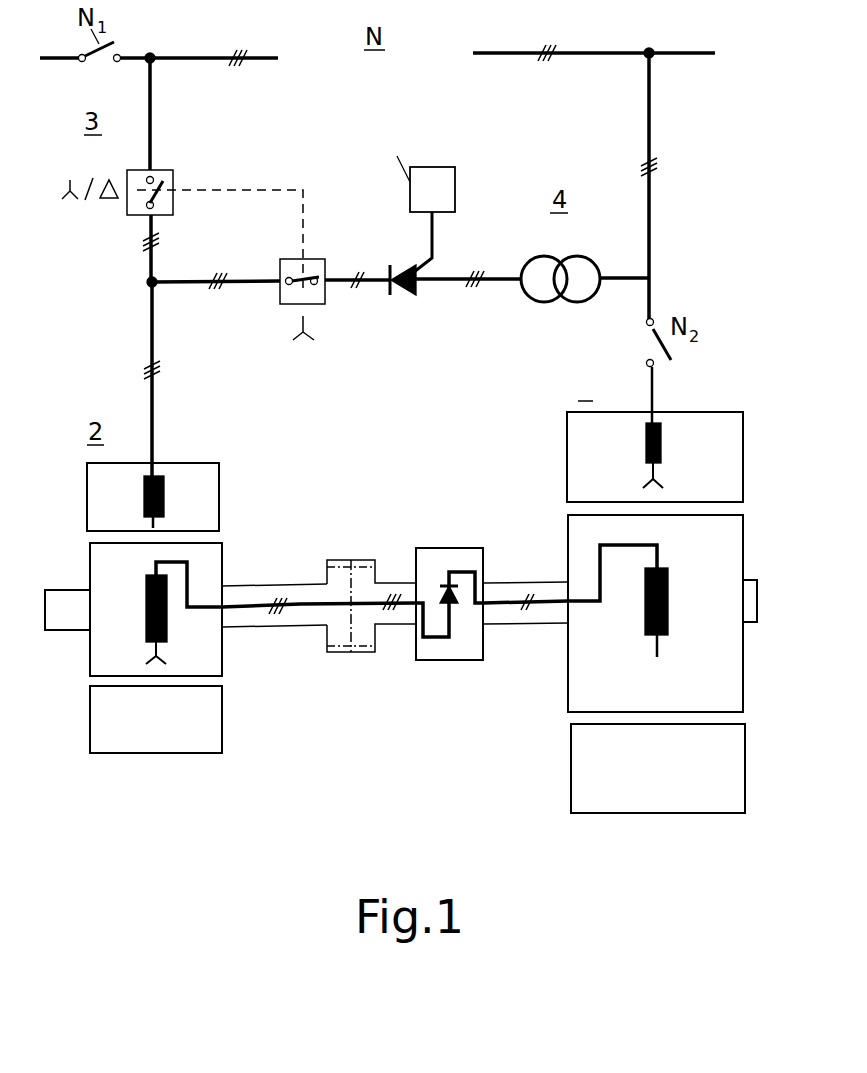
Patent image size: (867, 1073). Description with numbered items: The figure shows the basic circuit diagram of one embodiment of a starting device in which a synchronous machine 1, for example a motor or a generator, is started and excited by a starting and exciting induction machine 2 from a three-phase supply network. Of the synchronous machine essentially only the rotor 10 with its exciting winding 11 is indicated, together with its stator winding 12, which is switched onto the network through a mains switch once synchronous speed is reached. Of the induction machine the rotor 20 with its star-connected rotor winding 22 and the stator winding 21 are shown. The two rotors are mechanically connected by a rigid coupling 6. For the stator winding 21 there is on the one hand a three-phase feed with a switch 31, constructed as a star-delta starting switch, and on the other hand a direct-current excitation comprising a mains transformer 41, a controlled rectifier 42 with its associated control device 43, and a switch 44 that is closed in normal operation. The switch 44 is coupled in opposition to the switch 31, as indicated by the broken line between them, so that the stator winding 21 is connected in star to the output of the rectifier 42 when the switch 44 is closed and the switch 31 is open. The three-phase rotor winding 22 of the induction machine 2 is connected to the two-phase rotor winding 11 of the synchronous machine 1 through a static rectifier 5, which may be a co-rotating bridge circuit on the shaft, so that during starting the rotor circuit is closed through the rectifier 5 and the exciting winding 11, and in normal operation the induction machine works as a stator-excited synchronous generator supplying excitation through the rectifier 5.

The synchronous machine 1 is at (662, 594).
The starting and exciting induction machine 2 is at (133, 608).
The static rectifier 5 is at (451, 648).
The rigid coupling 6 is at (352, 653).
The rotor 10 is at (580, 634).
The exciting winding 11 is at (645, 622).
The stator winding 12 is at (660, 448).
The rotor 20 is at (200, 660).
The stator winding 21 is at (165, 508).
The rotor winding 22 is at (146, 600).
The switch 31 is at (165, 170).
The mains transformer 41 is at (527, 299).
The controlled rectifier 42 is at (403, 293).
The control device 43 is at (456, 174).
The switch 44 is at (326, 262).